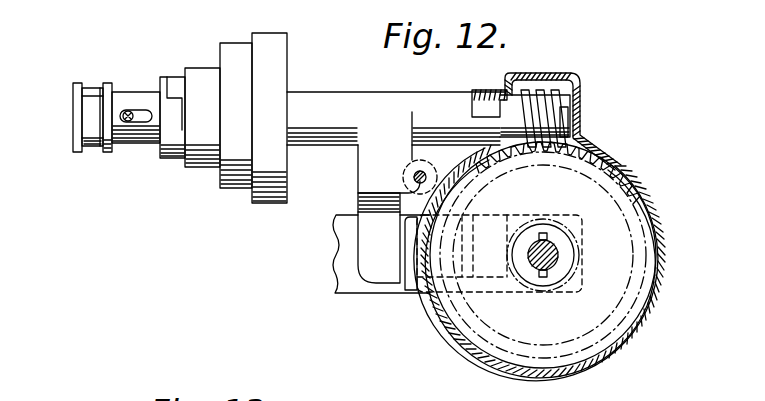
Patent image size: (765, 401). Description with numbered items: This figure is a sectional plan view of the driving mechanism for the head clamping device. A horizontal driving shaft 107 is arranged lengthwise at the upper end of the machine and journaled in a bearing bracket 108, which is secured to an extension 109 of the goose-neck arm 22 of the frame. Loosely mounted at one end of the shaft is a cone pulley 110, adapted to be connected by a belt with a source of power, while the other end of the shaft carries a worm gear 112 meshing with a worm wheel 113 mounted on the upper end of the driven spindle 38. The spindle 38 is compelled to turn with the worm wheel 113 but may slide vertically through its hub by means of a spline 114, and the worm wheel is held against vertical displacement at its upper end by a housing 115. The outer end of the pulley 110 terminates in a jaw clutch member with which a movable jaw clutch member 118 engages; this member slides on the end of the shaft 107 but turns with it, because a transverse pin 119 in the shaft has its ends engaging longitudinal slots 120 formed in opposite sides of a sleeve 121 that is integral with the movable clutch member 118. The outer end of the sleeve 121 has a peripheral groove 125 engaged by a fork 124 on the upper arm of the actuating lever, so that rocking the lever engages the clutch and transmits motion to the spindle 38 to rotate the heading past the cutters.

The goose-neck arm 22 is at (338, 280).
The driven spindle 38 is at (557, 257).
The horizontal driving shaft 107 is at (473, 117).
The bearing bracket 108 is at (396, 118).
The extension 109 is at (412, 288).
The cone pulley 110 is at (240, 180).
The worm gear 112 is at (553, 95).
The worm wheel 113 is at (617, 165).
The spline 114 is at (175, 85).
The housing 115 is at (665, 272).
The movable jaw clutch member 118 is at (172, 135).
The transverse pin 119 is at (128, 111).
The longitudinal slots 120 is at (140, 124).
The sleeve 121 is at (143, 97).
The fork 124 is at (92, 150).
The peripheral groove 125 is at (88, 119).